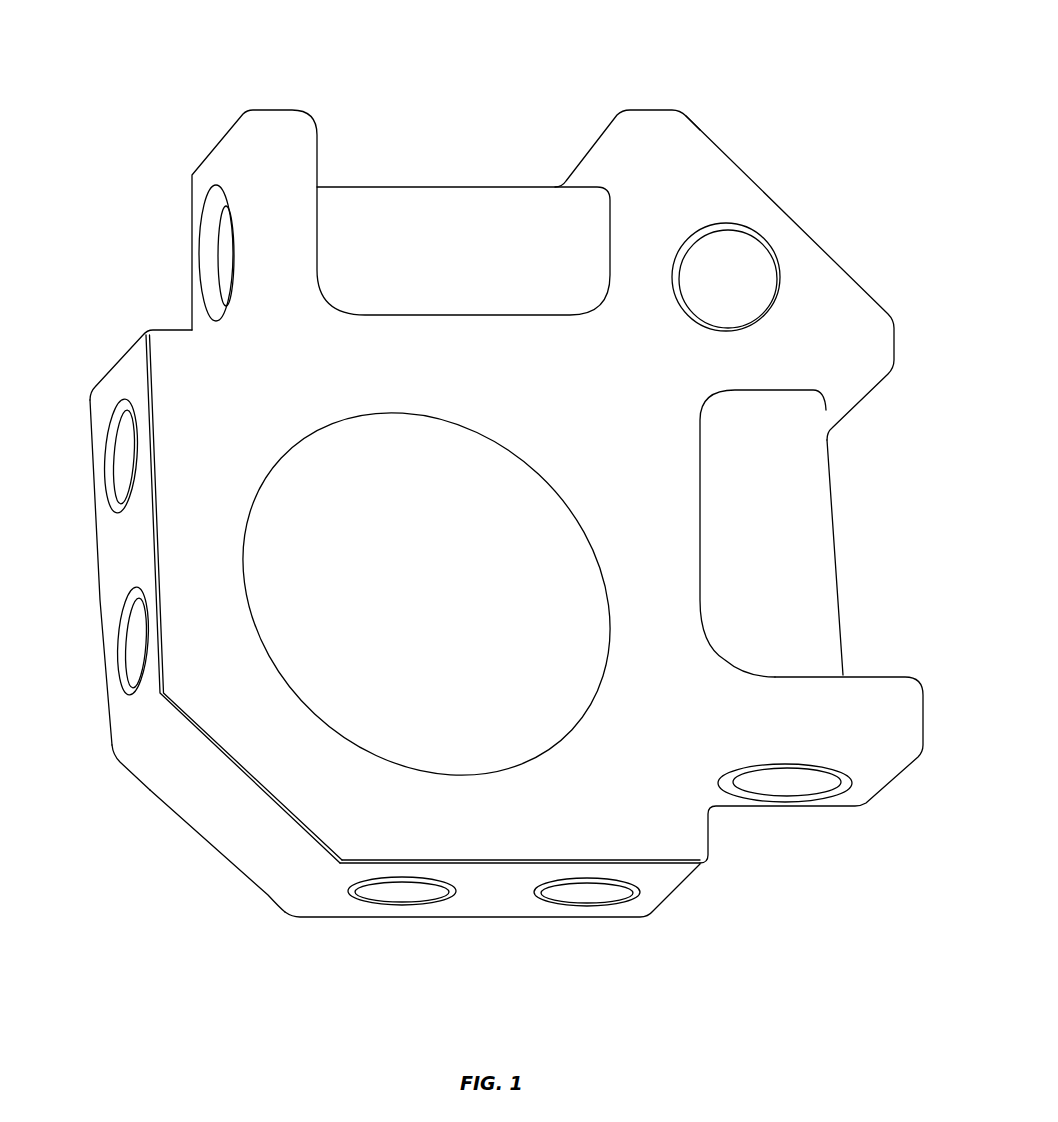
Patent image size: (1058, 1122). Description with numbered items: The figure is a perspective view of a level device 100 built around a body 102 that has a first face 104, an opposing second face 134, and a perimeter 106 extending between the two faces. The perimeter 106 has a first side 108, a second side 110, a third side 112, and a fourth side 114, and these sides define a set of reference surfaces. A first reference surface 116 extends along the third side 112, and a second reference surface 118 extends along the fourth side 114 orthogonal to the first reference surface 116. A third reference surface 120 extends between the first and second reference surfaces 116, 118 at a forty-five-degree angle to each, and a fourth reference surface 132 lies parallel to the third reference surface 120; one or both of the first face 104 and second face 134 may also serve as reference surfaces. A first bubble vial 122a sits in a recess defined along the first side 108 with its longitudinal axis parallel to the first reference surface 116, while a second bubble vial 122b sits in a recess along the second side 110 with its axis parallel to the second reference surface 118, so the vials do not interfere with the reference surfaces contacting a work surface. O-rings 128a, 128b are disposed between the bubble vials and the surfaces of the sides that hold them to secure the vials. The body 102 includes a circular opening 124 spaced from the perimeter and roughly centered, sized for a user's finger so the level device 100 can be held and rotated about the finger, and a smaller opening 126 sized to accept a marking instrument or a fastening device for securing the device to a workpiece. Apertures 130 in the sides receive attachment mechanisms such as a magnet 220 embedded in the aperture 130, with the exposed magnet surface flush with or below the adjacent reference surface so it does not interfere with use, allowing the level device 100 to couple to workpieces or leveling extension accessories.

The level device 100 is at (772, 55).
The body 102 is at (670, 143).
The first face 104 is at (265, 367).
The perimeter 106 is at (162, 752).
The first side 108 is at (482, 158).
The second side 110 is at (855, 477).
The third side 112 is at (517, 913).
The fourth side 114 is at (100, 580).
The first reference surface 116 is at (520, 886).
The second reference surface 118 is at (141, 450).
The third reference surface 120 is at (244, 599).
The first bubble vial 122a is at (463, 251).
The second bubble vial 122b is at (763, 533).
The opening 124 is at (426, 593).
The opening 126 is at (726, 277).
The O-ring 128a is at (212, 238).
The O-ring 128b is at (753, 788).
The aperture 130 is at (379, 700).
The magnet 220 is at (379, 700).
The fourth reference surface 132 is at (793, 222).
The second face 134 is at (245, 873).